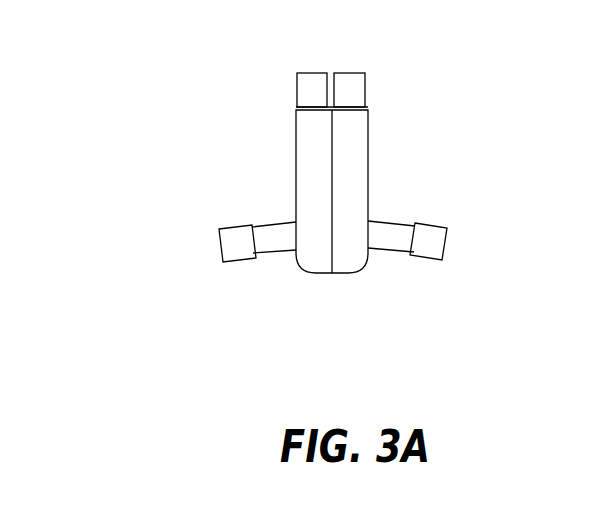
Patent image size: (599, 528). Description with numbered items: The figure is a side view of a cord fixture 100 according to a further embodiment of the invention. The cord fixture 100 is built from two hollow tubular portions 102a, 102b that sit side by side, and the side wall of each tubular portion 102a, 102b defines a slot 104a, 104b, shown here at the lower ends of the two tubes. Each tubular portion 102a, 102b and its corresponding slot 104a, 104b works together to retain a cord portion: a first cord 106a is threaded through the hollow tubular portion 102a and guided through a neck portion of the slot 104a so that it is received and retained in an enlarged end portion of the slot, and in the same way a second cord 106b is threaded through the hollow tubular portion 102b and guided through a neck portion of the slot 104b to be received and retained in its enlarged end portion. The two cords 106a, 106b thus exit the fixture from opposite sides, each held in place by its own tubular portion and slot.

The cord fixture 100 is at (152, 53).
The hollow tubular portion 102a is at (310, 160).
The hollow tubular portion 102b is at (355, 158).
The slot 104a is at (299, 257).
The slot 104b is at (367, 255).
The first cord 106a is at (277, 225).
The second cord 106b is at (393, 226).